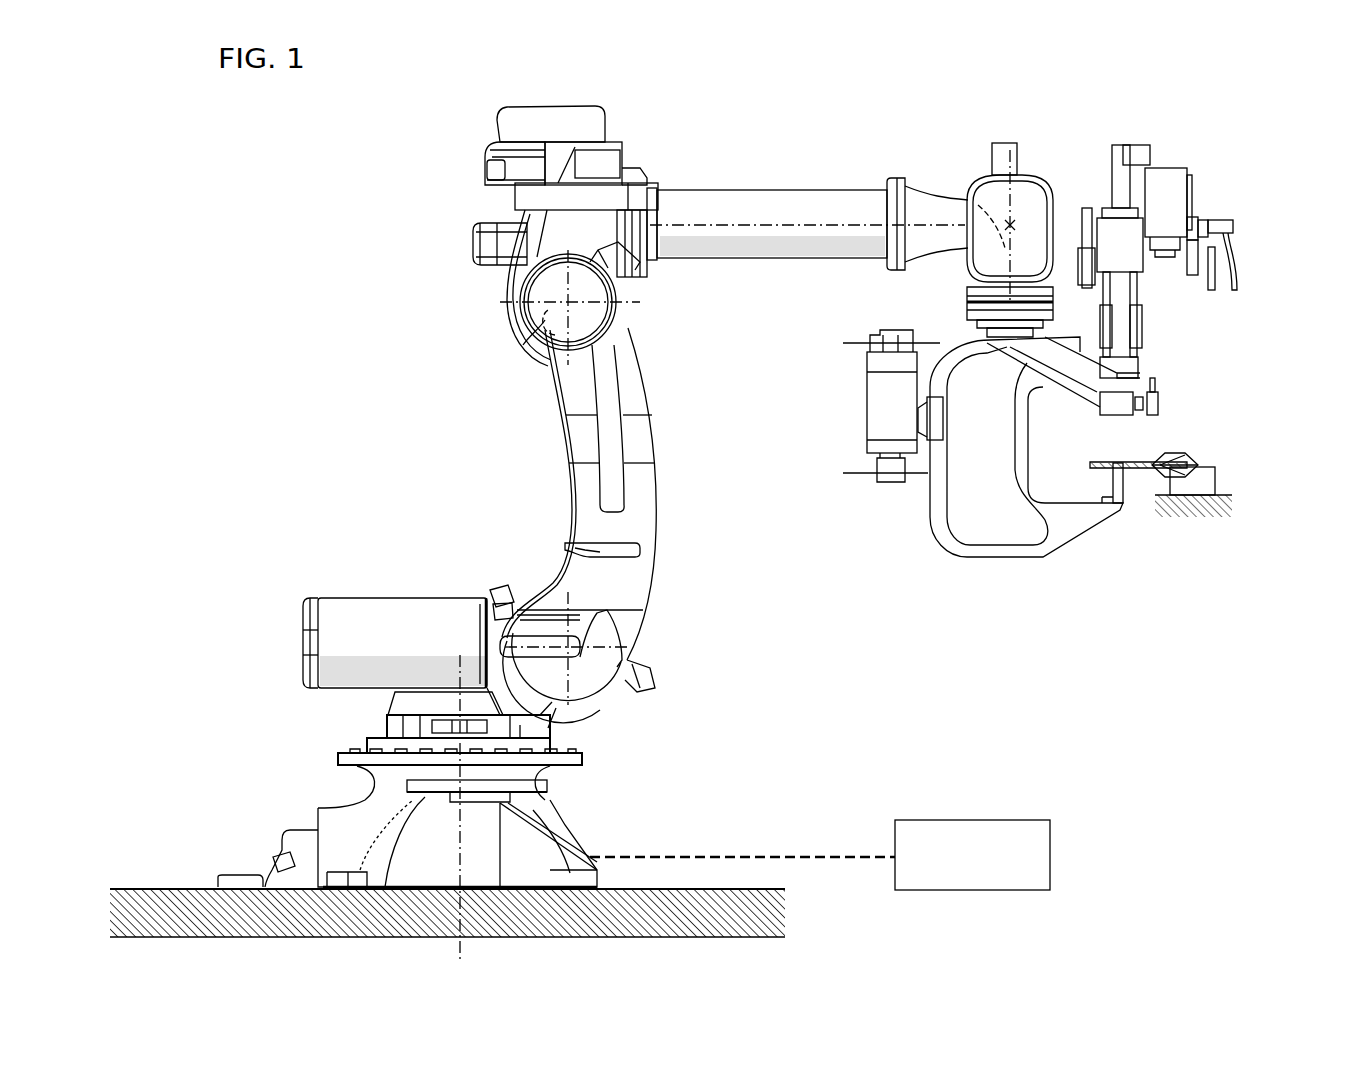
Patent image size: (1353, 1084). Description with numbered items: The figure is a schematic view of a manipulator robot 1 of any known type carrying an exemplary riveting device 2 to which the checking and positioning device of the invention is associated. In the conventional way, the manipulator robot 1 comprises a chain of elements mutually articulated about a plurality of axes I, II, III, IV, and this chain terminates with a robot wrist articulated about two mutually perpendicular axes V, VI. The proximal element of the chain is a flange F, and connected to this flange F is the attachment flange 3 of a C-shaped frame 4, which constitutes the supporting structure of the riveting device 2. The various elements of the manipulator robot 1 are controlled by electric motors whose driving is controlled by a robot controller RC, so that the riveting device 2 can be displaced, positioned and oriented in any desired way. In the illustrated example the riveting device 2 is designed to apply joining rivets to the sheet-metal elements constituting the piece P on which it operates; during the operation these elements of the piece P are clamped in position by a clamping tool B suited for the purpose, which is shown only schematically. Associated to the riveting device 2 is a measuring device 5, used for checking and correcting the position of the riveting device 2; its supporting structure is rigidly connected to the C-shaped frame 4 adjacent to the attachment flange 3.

The manipulator robot 1 is at (378, 289).
The riveting device 2 is at (1258, 268).
The attachment flange 3 is at (962, 326).
The C-shaped frame 4 is at (920, 525).
The measuring device 5 is at (1160, 403).
The axis I is at (460, 840).
The axis II is at (573, 656).
The axis III is at (525, 340).
The axis IV is at (712, 226).
The wrist axis V is at (1022, 222).
The wrist axis VI is at (976, 212).
The flange F is at (965, 303).
The clamping tool B is at (1185, 458).
The piece P is at (1138, 478).
The robot controller RC is at (965, 835).